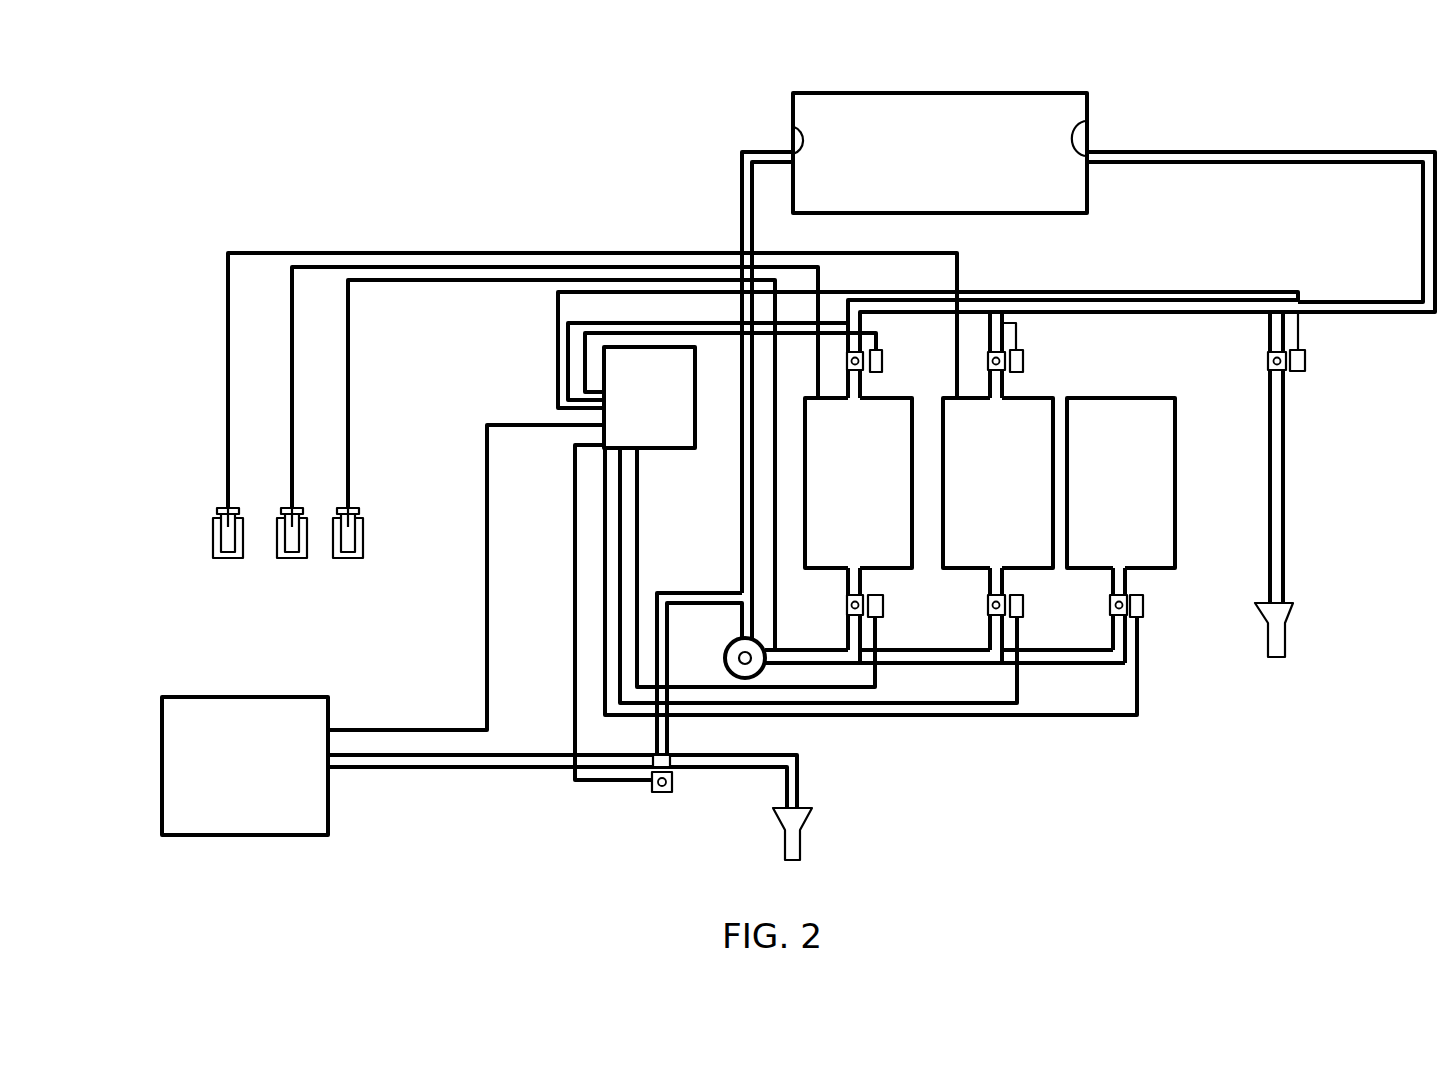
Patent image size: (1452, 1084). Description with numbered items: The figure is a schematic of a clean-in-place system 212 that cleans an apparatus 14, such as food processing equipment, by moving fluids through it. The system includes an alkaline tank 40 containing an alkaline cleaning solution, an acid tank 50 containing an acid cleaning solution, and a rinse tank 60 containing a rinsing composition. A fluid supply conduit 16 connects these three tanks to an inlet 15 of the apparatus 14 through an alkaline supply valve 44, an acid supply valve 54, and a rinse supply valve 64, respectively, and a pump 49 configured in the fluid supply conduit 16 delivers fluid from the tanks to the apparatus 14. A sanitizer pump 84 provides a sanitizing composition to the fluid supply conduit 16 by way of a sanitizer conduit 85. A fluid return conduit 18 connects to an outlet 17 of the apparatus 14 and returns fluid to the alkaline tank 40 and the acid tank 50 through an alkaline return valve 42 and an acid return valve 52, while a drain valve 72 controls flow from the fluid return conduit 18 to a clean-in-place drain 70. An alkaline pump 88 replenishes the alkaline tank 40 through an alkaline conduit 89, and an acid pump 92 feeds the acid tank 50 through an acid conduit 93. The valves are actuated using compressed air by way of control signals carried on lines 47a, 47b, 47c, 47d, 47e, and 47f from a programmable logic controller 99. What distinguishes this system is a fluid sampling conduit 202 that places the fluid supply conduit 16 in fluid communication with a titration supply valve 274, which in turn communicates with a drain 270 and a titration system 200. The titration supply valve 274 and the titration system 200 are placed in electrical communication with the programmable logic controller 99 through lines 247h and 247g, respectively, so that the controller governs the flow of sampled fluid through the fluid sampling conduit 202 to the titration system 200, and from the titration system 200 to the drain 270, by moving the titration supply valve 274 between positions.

The clean-in-place system 212 is at (485, 150).
The apparatus 14 is at (958, 100).
The inlet 15 is at (794, 127).
The outlet 17 is at (1087, 121).
The fluid supply conduit 16 is at (740, 195).
The fluid return conduit 18 is at (1305, 150).
The acid conduit 93 is at (226, 352).
The alkaline conduit 89 is at (290, 403).
The sanitizer conduit 85 is at (350, 423).
The acid pump 92 is at (217, 562).
The alkaline pump 88 is at (293, 562).
The sanitizer pump 84 is at (363, 524).
The programmable logic controller 99 is at (672, 452).
The line 47d is at (558, 347).
The line 47e is at (568, 377).
The line 47f is at (558, 410).
The line 47a is at (637, 522).
The line 47b is at (620, 578).
The line 47c is at (604, 657).
The fluid sampling conduit 202 is at (712, 603).
The pump 49 is at (727, 652).
The alkaline tank 40 is at (828, 563).
The acid tank 50 is at (1032, 562).
The rinse tank 60 is at (1143, 560).
The alkaline return valve 42 is at (865, 370).
The acid return valve 52 is at (1006, 370).
The drain valve 72 is at (1290, 372).
The clean-in-place drain 70 is at (1292, 608).
The alkaline supply valve 44 is at (847, 605).
The acid supply valve 54 is at (987, 594).
The rinse supply valve 64 is at (1110, 613).
The titration system 200 is at (160, 738).
The line 247g is at (483, 590).
The line 247h is at (607, 785).
The drain 270 is at (812, 812).
The titration supply valve 274 is at (665, 793).